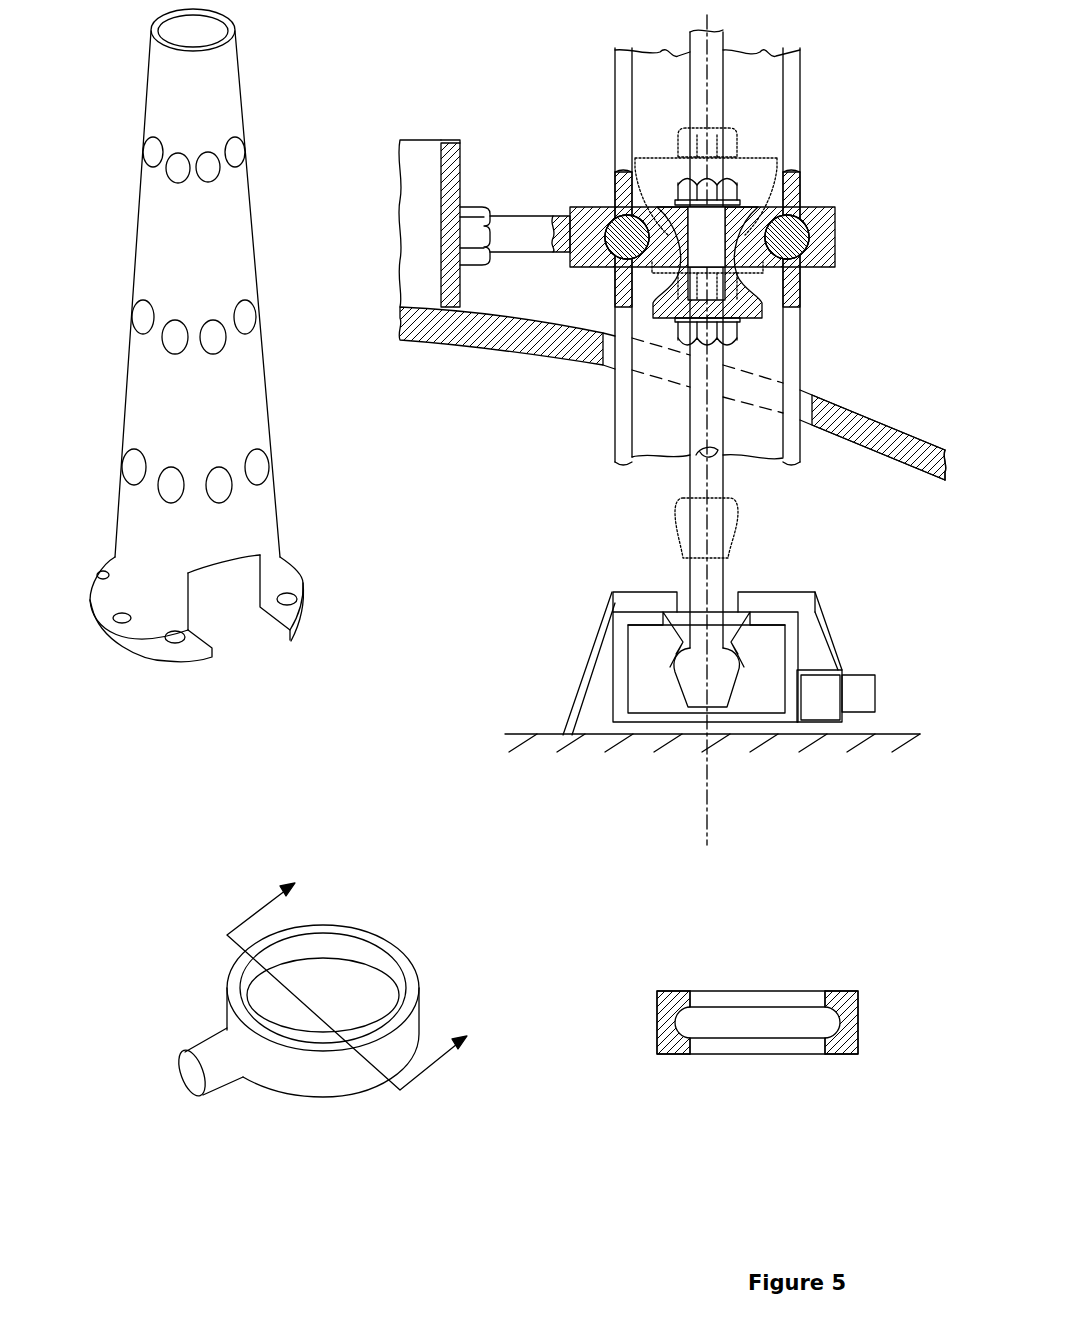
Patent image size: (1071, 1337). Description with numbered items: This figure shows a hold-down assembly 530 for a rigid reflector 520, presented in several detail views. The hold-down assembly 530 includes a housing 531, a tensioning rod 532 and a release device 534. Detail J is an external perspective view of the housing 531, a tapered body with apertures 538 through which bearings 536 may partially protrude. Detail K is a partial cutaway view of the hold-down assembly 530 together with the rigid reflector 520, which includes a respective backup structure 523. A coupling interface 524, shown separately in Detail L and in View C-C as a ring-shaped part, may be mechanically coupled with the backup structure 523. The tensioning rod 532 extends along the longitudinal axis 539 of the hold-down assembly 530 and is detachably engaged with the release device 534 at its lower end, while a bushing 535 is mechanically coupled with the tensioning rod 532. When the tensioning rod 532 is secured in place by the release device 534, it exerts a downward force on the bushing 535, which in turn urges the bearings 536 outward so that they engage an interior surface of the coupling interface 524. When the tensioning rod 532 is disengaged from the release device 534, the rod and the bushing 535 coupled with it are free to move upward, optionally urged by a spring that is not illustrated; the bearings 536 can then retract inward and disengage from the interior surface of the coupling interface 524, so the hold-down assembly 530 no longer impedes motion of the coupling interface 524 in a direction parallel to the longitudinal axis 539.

The rigid reflector 520 is at (448, 333).
The backup structure 523 is at (462, 186).
The coupling interface 524 is at (827, 243).
The hold-down assembly 530 is at (134, 34).
The housing 531 is at (253, 237).
The tensioning rod 532 is at (715, 492).
The release device 534 is at (785, 670).
The bushing 535 is at (748, 175).
The bearings 536 is at (805, 243).
The apertures 538 is at (257, 472).
The longitudinal axis 539 is at (707, 792).